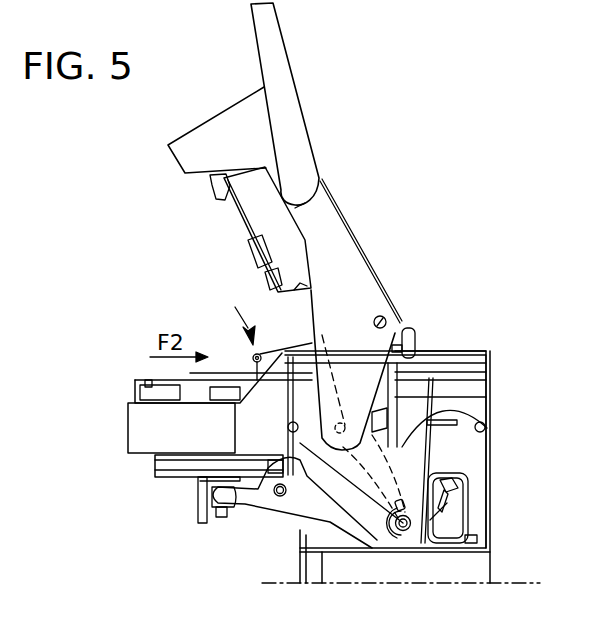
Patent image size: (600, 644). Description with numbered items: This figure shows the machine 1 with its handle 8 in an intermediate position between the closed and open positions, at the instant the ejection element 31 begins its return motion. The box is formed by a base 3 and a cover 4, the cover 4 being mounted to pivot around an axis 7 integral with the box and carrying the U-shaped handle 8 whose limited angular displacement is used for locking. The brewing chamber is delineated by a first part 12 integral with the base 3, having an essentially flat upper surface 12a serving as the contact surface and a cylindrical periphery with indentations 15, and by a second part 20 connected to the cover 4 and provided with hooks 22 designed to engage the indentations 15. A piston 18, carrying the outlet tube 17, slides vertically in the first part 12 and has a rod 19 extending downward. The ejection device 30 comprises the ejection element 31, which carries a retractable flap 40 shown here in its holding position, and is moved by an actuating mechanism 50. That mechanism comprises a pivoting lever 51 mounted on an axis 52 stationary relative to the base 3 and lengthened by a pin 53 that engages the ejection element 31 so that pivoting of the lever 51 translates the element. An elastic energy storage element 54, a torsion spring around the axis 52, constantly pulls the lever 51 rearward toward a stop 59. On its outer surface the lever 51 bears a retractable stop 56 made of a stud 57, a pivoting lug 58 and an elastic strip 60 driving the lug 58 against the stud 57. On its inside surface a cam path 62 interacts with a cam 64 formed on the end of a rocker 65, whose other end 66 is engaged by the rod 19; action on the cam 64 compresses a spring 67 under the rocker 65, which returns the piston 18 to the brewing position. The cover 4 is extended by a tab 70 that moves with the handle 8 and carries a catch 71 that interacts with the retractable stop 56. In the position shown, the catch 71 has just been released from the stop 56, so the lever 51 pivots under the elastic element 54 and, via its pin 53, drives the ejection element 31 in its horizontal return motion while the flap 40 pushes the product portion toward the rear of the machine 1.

The machine 1 is at (508, 110).
The base 3 is at (140, 445).
The cover 4 is at (205, 133).
The axis 7 is at (383, 312).
The handle 8 is at (272, 48).
The first part 12 is at (195, 396).
The upper surface 12a is at (145, 380).
The indentations 15 is at (150, 395).
The outlet tube 17 is at (203, 518).
The piston 18 is at (190, 380).
The rod 19 is at (223, 518).
The second part 20 is at (258, 213).
The hooks 22 is at (220, 195).
The ejection device 30 is at (232, 316).
The ejection element 31 is at (307, 347).
The retractable flap 40 is at (250, 352).
The actuating mechanism 50 is at (432, 453).
The pivoting lever 51 is at (490, 428).
The axis 52 is at (385, 465).
The pin 53 is at (406, 316).
The elastic energy storage element 54 is at (410, 530).
The retractable stop 56 is at (482, 353).
The stud 57 is at (403, 420).
The lug 58 is at (425, 390).
The stop 59 is at (435, 493).
The elastic strip 60 is at (447, 503).
The cam path 62 is at (297, 585).
The cam 64 is at (365, 535).
The rocker 65 is at (283, 508).
The other end 66 is at (230, 497).
The spring 67 is at (322, 527).
The tab 70 is at (367, 365).
The catch 71 is at (303, 335).